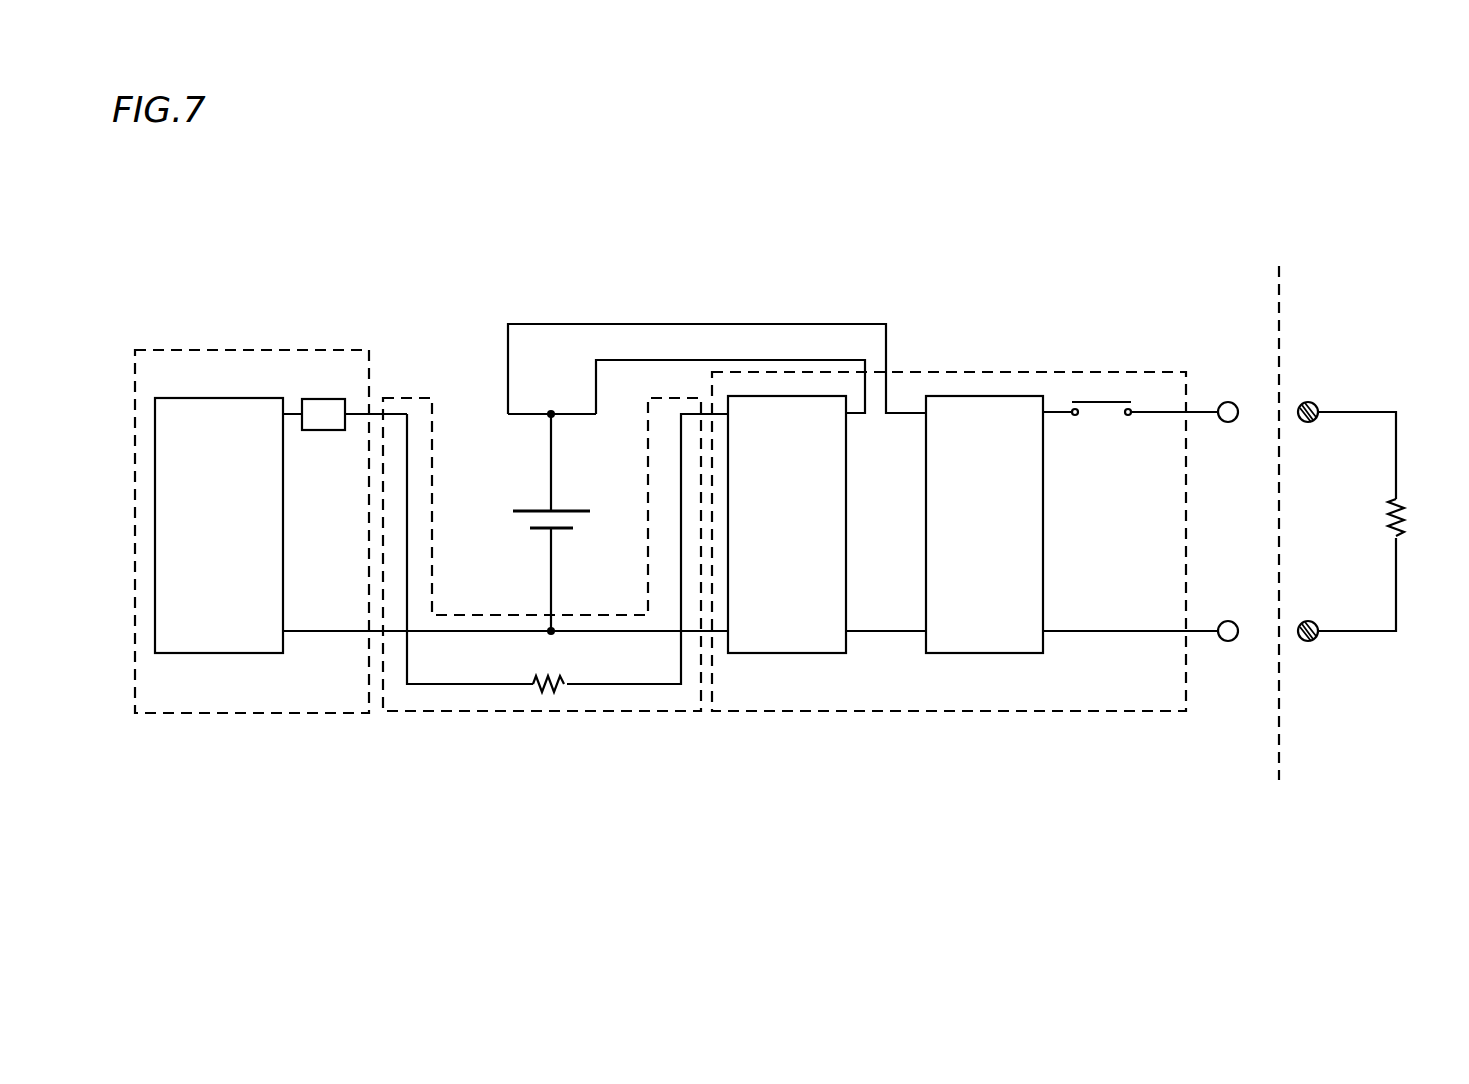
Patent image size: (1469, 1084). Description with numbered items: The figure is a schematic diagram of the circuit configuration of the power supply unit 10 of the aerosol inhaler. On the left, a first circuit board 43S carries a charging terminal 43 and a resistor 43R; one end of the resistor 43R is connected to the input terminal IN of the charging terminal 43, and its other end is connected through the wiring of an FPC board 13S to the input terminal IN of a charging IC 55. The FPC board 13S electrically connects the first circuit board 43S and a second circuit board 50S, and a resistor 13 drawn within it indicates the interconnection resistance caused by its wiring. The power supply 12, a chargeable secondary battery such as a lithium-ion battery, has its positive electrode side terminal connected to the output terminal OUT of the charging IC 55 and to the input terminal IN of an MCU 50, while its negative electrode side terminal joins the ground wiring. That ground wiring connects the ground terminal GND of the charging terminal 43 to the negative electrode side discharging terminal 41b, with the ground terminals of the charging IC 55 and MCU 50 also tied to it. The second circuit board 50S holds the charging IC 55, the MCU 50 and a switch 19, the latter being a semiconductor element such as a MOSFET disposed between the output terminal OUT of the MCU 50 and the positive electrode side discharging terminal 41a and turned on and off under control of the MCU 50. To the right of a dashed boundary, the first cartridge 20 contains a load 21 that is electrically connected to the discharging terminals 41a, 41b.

The power supply unit 10 is at (770, 290).
The power supply 12 is at (585, 503).
The resistor 13 is at (535, 688).
The FPC board 13S is at (605, 713).
The switch 19 is at (1100, 406).
The first cartridge 20 is at (1372, 286).
The load 21 is at (1404, 499).
The positive electrode side discharging terminal 41a is at (1238, 401).
The negative electrode side discharging terminal 41b is at (1238, 620).
The charging terminal 43 is at (213, 657).
The resistor 43R is at (302, 406).
The first circuit board 43S is at (325, 715).
The MCU 50 is at (985, 657).
The second circuit board 50S is at (913, 713).
The charging IC 55 is at (786, 657).